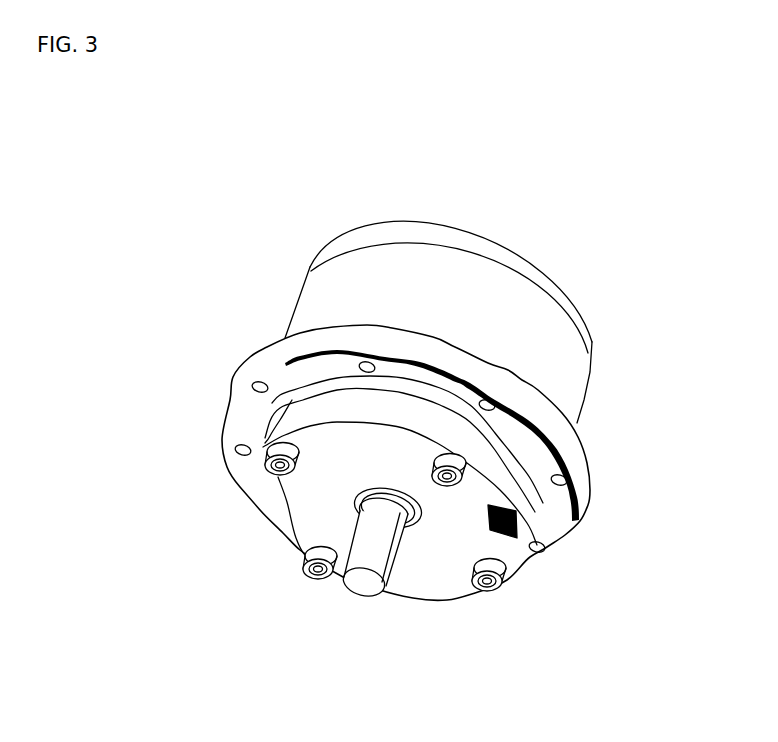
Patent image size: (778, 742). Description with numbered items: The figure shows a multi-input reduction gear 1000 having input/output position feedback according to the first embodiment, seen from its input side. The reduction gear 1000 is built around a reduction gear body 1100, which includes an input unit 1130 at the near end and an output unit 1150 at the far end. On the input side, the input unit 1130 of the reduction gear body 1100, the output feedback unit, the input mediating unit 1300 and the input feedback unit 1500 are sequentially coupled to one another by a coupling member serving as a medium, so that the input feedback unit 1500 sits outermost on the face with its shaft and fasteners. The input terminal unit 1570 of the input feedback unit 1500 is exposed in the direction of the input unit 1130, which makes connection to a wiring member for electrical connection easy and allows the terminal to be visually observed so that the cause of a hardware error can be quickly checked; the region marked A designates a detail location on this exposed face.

The multi-input reduction gear 1000 is at (730, 176).
The reduction gear body 1100 is at (568, 388).
The input unit 1130 is at (214, 443).
The output unit 1150 is at (444, 226).
The input mediating unit 1300 is at (310, 387).
The input feedback unit 1500 is at (308, 488).
The input terminal unit 1570 is at (450, 581).
The detail region A is at (490, 598).